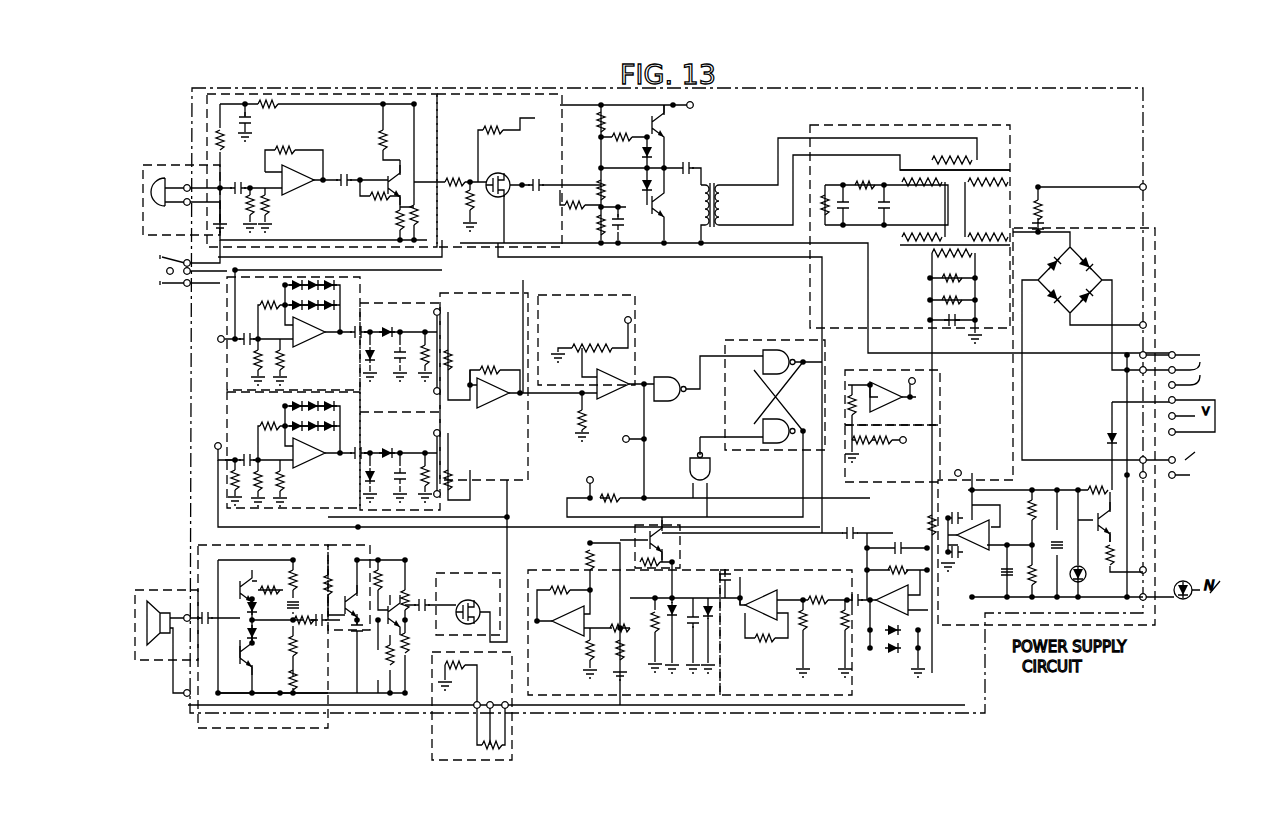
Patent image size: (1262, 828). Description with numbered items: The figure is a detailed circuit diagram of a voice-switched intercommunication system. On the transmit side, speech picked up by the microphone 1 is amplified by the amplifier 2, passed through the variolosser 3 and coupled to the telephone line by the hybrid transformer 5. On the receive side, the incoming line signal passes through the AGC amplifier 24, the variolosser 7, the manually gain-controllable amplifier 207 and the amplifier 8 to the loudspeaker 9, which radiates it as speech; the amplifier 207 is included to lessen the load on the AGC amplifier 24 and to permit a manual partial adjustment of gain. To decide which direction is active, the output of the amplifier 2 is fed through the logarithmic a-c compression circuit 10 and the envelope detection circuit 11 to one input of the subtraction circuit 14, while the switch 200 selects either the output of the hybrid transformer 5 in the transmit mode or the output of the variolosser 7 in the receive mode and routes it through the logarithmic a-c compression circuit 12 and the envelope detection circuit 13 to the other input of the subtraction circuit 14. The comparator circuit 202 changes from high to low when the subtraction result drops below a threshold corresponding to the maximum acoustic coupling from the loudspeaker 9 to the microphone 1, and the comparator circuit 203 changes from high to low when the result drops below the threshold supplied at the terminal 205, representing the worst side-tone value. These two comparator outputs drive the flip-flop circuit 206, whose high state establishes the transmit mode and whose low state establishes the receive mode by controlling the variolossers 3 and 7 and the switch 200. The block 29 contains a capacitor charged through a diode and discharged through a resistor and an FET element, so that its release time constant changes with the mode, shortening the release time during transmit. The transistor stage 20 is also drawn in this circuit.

The microphone 1 is at (162, 162).
The amplifier 2 is at (327, 95).
The variolosser 3 is at (478, 96).
The hybrid transformer 5 is at (1013, 164).
The variolosser 7 is at (458, 572).
The amplifier 8 is at (310, 727).
The loudspeaker 9 is at (160, 590).
The logarithmic a-c compression circuit 10 is at (227, 347).
The envelope detection circuit 11 is at (412, 306).
The logarithmic a-c compression circuit 12 is at (227, 412).
The envelope detection circuit 13 is at (445, 488).
The subtraction circuit 14 is at (528, 442).
The transistor switch 20 is at (680, 545).
The AGC amplifier 24 is at (850, 678).
The block 29 is at (675, 693).
The switch 200 is at (370, 557).
The comparator circuit 202 is at (642, 320).
The comparator circuit 203 is at (940, 392).
The terminal 205 is at (940, 442).
The flip-flop circuit 206 is at (755, 338).
The manually gain-controllable amplifier 207 is at (513, 738).